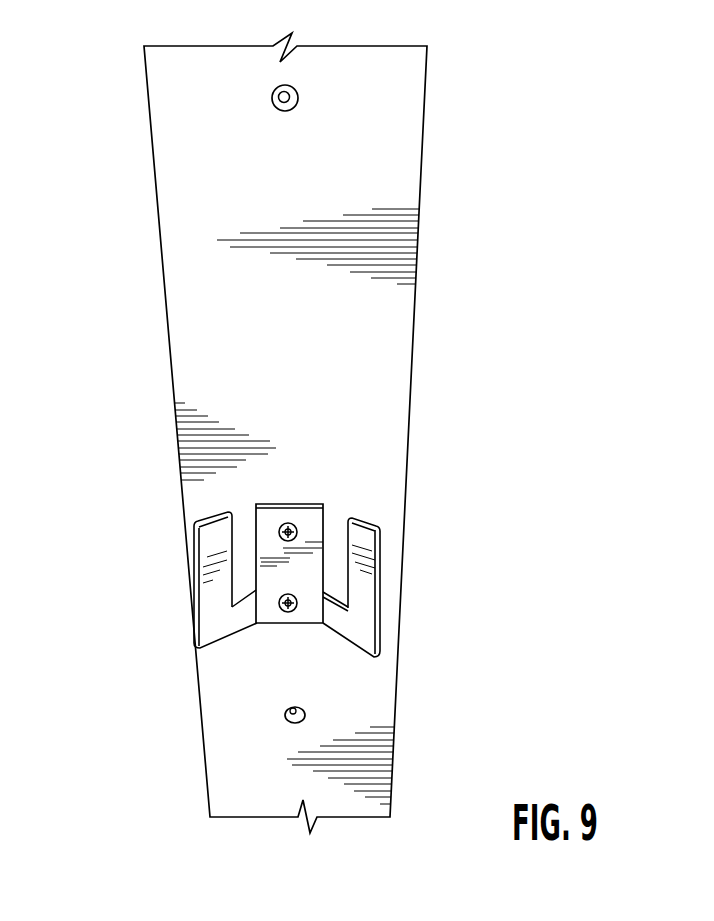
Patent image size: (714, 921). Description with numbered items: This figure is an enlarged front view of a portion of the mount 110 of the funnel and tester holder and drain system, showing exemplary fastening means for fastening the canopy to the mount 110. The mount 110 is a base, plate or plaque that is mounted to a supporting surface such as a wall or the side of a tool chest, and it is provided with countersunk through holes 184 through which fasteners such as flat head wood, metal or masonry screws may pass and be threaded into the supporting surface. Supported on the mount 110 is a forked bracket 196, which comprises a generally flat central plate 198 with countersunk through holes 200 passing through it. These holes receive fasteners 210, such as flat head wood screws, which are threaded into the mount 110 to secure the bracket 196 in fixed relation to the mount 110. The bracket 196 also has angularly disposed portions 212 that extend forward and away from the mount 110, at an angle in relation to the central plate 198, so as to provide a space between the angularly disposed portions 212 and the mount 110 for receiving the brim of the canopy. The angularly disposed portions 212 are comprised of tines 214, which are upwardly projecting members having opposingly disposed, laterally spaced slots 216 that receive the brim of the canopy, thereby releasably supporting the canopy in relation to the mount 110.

The mount 110 is at (398, 228).
The countersunk through holes 184 is at (290, 86).
The bracket 196 is at (296, 524).
The central plate 198 is at (292, 504).
The countersunk through holes 200 is at (371, 605).
The fasteners 210 is at (296, 540).
The angularly disposed portions 212 is at (192, 515).
The tines 214 is at (212, 565).
The slots 216 is at (242, 548).